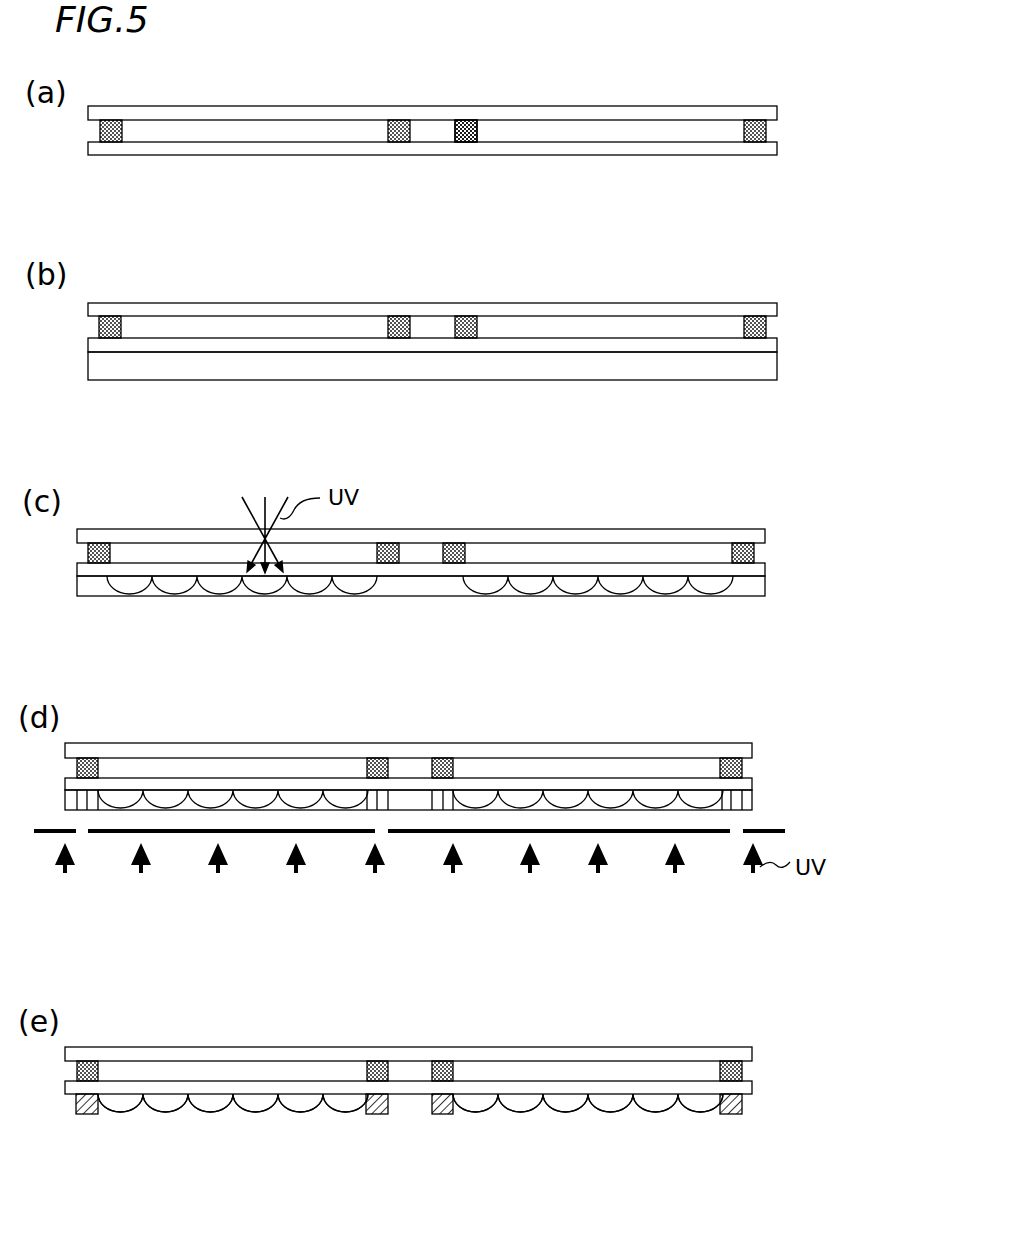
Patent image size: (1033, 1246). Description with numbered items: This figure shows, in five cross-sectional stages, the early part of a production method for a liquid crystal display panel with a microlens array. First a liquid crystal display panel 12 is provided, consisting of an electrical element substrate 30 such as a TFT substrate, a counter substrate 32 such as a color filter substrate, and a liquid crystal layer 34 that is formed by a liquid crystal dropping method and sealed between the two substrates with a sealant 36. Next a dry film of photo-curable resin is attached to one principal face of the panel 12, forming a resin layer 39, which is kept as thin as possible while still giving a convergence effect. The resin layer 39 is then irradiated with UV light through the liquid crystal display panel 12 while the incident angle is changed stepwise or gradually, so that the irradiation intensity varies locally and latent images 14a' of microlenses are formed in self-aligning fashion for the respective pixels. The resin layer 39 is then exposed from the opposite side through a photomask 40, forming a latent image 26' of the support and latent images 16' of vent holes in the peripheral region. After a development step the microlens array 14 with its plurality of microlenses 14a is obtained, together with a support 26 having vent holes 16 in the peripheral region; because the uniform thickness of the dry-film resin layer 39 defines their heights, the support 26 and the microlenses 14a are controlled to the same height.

The counter substrate 32 is at (777, 113).
The liquid crystal layer 34 is at (740, 130).
The electrical element substrate 30 is at (777, 146).
The liquid crystal display panel 12 is at (853, 96).
The sealant 36 is at (466, 143).
The resin layer 39 is at (777, 370).
The latent images of microlenses 14a' is at (415, 747).
The latent images of vent holes 16' is at (373, 805).
The latent image of support 26' is at (410, 853).
The photomask 40 is at (775, 830).
The vent holes 16 is at (372, 1110).
The support 26 is at (434, 1135).
The microlenses 14a is at (418, 1127).
The microlens array 14 is at (418, 1127).